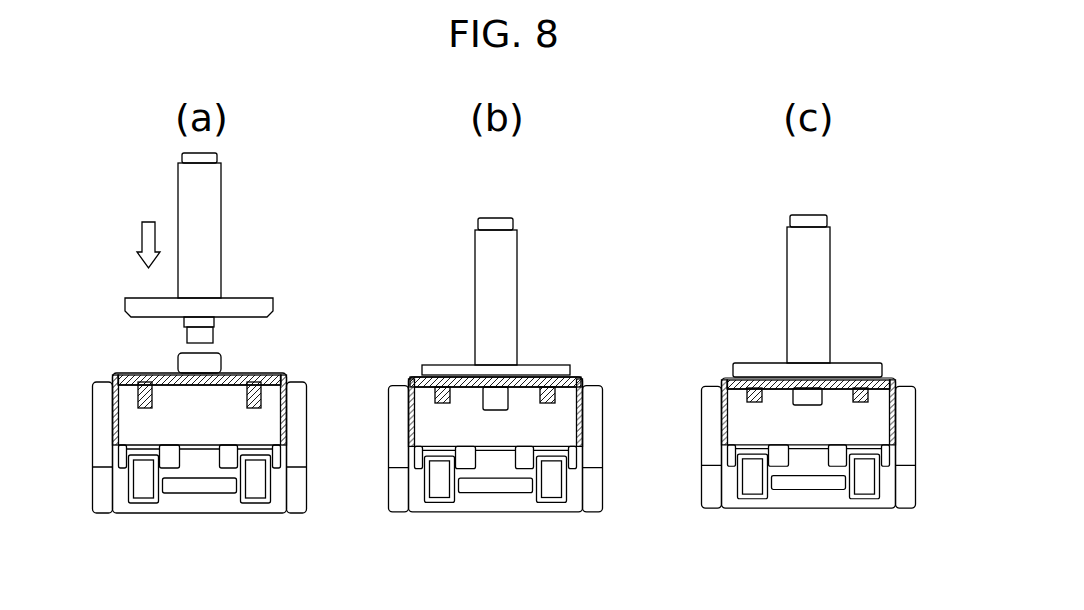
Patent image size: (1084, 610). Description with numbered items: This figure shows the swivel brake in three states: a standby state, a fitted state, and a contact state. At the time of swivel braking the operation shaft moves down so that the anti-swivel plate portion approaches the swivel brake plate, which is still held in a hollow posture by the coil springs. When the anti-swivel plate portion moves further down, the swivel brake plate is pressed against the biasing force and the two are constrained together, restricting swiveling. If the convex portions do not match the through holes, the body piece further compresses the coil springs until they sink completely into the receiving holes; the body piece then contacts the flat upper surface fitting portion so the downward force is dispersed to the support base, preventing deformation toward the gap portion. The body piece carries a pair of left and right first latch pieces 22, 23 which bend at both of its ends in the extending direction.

The first latch piece 22 is at (720, 412).
The first latch piece 23 is at (900, 418).